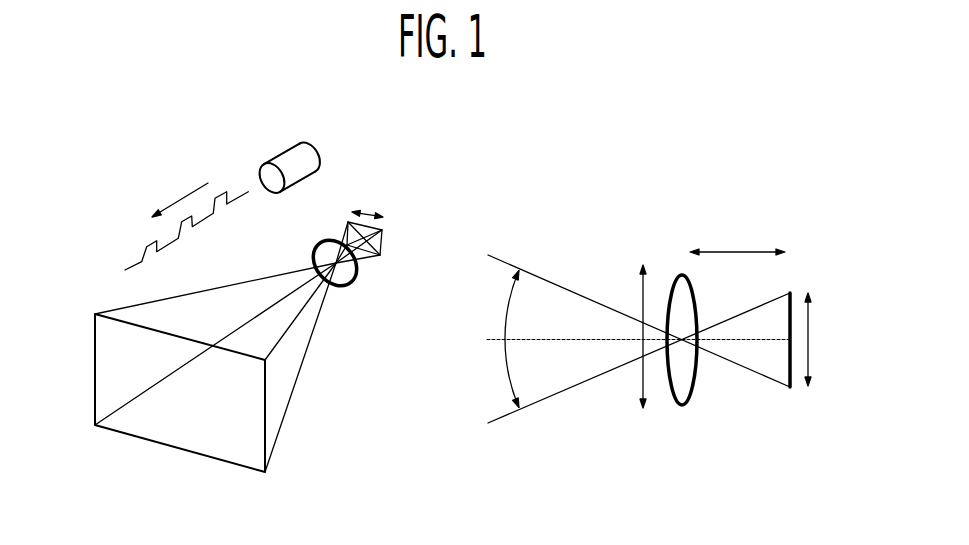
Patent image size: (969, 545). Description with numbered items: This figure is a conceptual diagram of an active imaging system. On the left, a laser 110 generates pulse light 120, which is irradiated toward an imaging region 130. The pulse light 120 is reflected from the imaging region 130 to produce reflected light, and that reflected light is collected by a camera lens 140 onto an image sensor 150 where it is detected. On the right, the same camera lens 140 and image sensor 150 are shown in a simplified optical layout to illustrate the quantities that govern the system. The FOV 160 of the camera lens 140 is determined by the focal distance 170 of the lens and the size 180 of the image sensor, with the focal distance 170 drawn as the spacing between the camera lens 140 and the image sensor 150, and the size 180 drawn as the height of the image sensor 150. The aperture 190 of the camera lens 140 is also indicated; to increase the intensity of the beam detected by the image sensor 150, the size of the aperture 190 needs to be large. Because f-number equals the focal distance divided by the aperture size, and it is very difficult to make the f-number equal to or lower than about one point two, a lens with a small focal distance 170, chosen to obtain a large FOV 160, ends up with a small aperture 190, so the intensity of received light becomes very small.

The laser 110 is at (280, 150).
The pulse light 120 is at (148, 241).
The imaging region 130 is at (223, 460).
The camera lens 140 is at (351, 285).
The image sensor 150 is at (382, 244).
The FOV 160 is at (489, 339).
The focal distance 170 is at (737, 239).
The size of the image sensor 180 is at (598, 283).
The aperture 190 is at (632, 287).